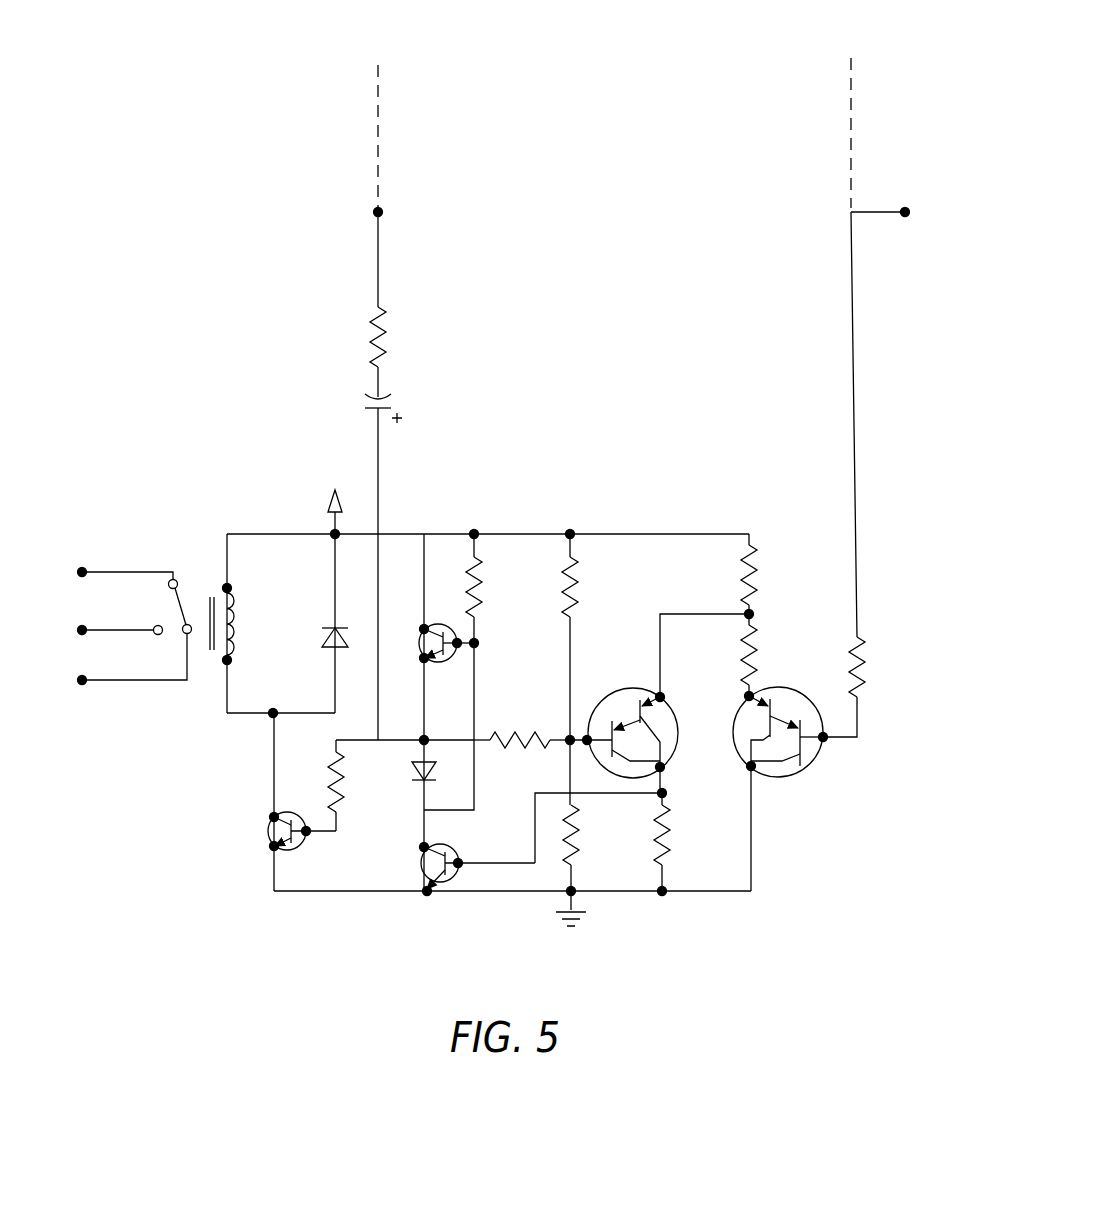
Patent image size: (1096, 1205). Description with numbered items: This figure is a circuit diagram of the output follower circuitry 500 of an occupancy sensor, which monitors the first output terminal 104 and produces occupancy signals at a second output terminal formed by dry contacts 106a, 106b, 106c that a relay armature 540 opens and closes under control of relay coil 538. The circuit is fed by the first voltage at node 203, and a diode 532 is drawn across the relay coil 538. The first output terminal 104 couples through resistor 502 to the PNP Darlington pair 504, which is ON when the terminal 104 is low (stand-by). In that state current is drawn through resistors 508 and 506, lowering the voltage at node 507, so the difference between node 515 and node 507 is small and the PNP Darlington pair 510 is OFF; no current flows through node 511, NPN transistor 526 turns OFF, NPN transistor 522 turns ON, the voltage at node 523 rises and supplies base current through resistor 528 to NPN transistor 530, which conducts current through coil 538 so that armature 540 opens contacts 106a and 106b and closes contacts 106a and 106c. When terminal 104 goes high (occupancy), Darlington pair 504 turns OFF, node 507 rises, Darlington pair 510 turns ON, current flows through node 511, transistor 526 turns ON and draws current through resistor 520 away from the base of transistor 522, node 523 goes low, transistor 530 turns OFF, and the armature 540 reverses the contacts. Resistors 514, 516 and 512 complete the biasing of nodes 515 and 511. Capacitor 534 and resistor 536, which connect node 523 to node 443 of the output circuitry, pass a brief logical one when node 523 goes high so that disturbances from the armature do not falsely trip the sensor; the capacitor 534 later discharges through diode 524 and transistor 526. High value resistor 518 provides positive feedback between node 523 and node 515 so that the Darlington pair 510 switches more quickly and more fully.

The output follower circuitry 500 is at (652, 50).
The first output terminal 104 is at (905, 210).
The node 443 is at (382, 212).
The resistor 536 is at (386, 340).
The capacitor 534 is at (388, 406).
The node 203 is at (333, 532).
The dry contact 106a is at (81, 571).
The dry contact 106b is at (81, 628).
The dry contact 106c is at (81, 680).
The armature 540 is at (173, 614).
The relay coil 538 is at (240, 620).
The diode 532 is at (324, 652).
The NPN transistor 522 is at (423, 634).
The resistor 520 is at (480, 586).
The resistor 514 is at (577, 586).
The node 523 is at (426, 738).
The high value resistor 518 is at (522, 760).
The node 515 is at (568, 738).
The diode 524 is at (412, 772).
The resistor 528 is at (344, 800).
The NPN transistor 530 is at (268, 836).
The NPN transistor 526 is at (421, 870).
The node 511 is at (667, 793).
The resistor 516 is at (578, 845).
The resistor 512 is at (668, 845).
The PNP Darlington pair 510 is at (664, 694).
The node 507 is at (757, 614).
The resistor 508 is at (757, 570).
The resistor 506 is at (757, 655).
The PNP Darlington pair 504 is at (810, 770).
The resistor 502 is at (865, 685).